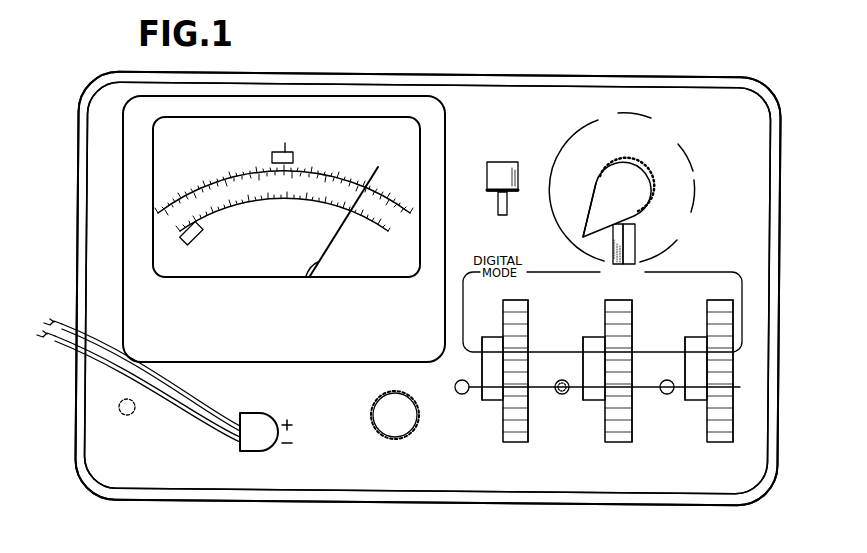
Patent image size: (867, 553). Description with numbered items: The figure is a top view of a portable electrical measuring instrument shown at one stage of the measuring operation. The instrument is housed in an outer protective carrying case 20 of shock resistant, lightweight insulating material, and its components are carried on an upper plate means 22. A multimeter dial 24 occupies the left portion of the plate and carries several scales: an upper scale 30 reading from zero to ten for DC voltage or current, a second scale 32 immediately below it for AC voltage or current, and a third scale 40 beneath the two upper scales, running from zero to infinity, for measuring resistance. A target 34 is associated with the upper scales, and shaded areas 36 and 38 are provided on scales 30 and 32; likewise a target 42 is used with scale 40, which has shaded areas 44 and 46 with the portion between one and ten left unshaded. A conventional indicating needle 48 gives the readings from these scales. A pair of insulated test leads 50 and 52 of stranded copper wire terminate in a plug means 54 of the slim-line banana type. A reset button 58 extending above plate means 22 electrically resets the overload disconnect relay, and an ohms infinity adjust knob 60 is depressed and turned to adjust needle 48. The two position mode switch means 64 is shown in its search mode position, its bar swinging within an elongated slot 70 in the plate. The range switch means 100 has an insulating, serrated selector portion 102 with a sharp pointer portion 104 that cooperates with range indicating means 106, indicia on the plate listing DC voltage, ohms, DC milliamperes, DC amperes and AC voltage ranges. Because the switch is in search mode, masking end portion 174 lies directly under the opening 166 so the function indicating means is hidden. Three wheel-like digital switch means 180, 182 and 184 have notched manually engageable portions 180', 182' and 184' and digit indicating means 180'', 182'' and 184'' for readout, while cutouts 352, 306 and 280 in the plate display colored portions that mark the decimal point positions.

The outer protective carrying case 20 is at (686, 509).
The upper plate means 22 is at (525, 97).
The multimeter dial 24 is at (391, 87).
The upper scale 30 is at (398, 192).
The second scale 32 is at (403, 222).
The target 34 is at (279, 148).
The shaded area 36 is at (164, 194).
The shaded area 38 is at (165, 221).
The third scale 40 is at (284, 206).
The target 42 is at (193, 250).
The shaded area 44 is at (219, 214).
The shaded area 46 is at (364, 224).
The indicating needle 48 is at (316, 263).
The test lead 50 is at (176, 424).
The test lead 52 is at (203, 419).
The plug means 54 is at (252, 414).
The reset button 58 is at (118, 404).
The ohms infinity adjust knob 60 is at (413, 428).
The mode switch means 64 is at (485, 163).
The elongated slot 70 is at (497, 206).
The range switch means 100 is at (694, 134).
The selector portion 102 is at (631, 172).
The pointer portion 104 is at (584, 236).
The range indicating means 106 is at (702, 213).
The opening 166 is at (628, 254).
The masking end portion 174 is at (620, 252).
The digital switch means 180 is at (500, 388).
The manually engageable portion 180' is at (548, 377).
The digit indicating means 180'' is at (479, 390).
The digital switch means 182 is at (604, 384).
The manually engageable portion 182' is at (653, 382).
The digit indicating means 182'' is at (588, 387).
The digital switch means 184 is at (706, 388).
The manually engageable portion 184' is at (750, 382).
The digit indicating means 184'' is at (683, 385).
The cutout portion 280 is at (661, 384).
The cutout 306 is at (559, 380).
The cutout 352 is at (461, 394).